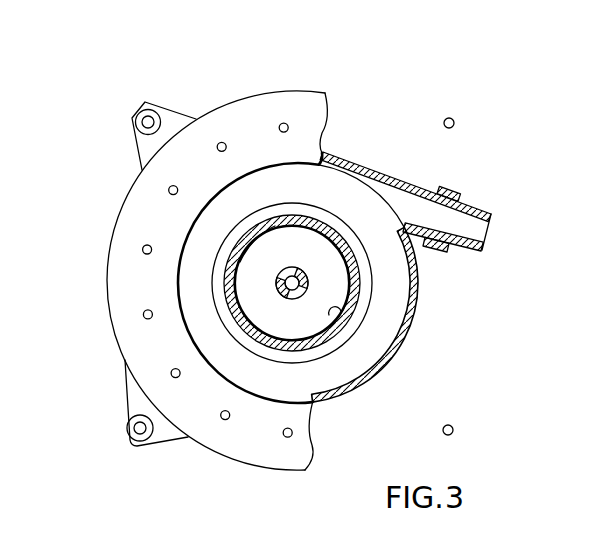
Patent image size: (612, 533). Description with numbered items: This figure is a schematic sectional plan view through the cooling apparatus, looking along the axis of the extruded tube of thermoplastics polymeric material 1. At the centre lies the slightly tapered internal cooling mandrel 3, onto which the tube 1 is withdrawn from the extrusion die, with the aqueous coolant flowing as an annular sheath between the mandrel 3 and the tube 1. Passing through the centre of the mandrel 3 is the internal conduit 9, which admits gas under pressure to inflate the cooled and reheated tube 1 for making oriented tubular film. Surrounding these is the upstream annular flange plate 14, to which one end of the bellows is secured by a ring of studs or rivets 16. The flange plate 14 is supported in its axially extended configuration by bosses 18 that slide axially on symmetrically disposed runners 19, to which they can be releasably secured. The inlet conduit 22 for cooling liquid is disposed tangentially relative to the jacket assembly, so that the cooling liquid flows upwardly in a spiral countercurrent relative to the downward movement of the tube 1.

The tube of thermoplastics polymeric material 1 is at (335, 352).
The internal cooling mandrel 3 is at (333, 315).
The internal conduit 9 is at (308, 283).
The annular flange plate 14 is at (135, 222).
The ring of studs or rivets 16 is at (283, 122).
The boss 18 is at (127, 426).
The runner 19 is at (146, 121).
The inlet conduit 22 is at (475, 223).